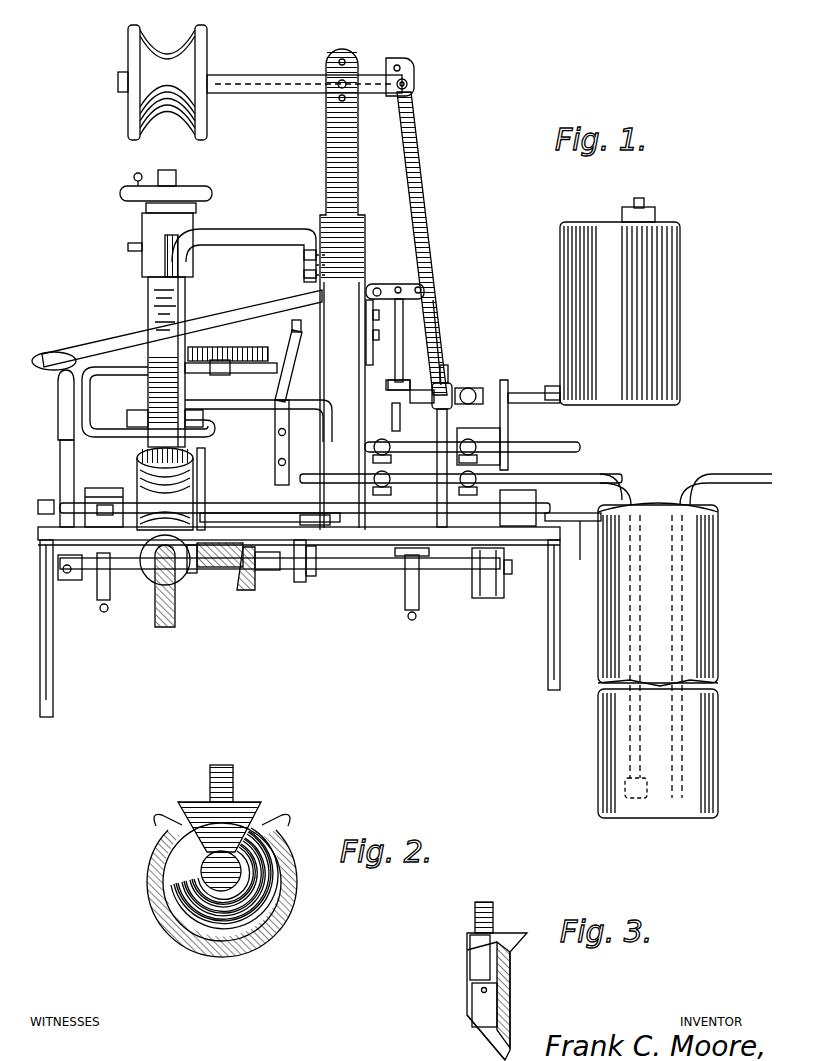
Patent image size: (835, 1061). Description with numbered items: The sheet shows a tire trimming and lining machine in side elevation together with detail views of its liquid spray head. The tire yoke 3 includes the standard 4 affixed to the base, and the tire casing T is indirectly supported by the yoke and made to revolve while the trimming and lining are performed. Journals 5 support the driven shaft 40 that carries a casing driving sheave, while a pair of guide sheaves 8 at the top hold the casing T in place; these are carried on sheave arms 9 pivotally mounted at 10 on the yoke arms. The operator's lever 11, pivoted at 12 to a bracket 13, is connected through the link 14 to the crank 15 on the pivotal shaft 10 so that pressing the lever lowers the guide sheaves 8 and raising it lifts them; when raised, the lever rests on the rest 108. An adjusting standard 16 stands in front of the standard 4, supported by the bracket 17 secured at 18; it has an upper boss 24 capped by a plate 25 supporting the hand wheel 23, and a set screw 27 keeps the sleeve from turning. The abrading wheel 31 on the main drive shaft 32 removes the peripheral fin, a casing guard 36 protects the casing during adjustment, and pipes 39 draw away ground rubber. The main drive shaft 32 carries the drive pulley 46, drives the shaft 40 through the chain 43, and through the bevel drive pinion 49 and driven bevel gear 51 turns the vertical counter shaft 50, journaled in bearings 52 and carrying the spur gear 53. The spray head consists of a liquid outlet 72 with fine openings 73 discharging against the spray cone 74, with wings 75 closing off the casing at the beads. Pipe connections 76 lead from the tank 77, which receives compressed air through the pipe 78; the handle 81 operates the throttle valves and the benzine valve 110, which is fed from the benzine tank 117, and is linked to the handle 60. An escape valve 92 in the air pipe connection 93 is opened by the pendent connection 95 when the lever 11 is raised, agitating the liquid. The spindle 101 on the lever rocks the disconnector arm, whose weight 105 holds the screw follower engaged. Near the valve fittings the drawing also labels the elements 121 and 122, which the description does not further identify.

In FIG. 1, the tire yoke 3 is at (359, 166).
In FIG. 1, the standard 4 is at (330, 366).
In FIG. 1, the journals 5 is at (96, 490).
In FIG. 1, the guide sheaves 8 is at (162, 62).
In FIG. 1, the sheave arms 9 is at (240, 80).
In FIG. 1, the pivotal shaft 10 is at (360, 75).
In FIG. 1, the operator's lever 11 is at (102, 350).
In FIG. 1, the pivot 12 is at (380, 288).
In FIG. 1, the bracket 13 is at (370, 342).
In FIG. 1, the link 14 is at (428, 180).
In FIG. 1, the crank 15 is at (408, 82).
In FIG. 1, the adjusting standard 16 is at (150, 322).
In FIG. 1, the bracket 17 is at (240, 230).
In FIG. 1, the securing point 18 is at (312, 232).
In FIG. 1, the hand wheel 23 is at (122, 196).
In FIG. 1, the upper boss 24 is at (142, 236).
In FIG. 1, the plate 25 is at (148, 210).
In FIG. 1, the set screw 27 is at (130, 248).
In FIG. 1, the abrading wheel 31 is at (164, 622).
In FIG. 1, the main drive shaft 32 is at (408, 574).
In FIG. 1, the casing guard 36 is at (170, 476).
In FIG. 1, the pipes 39 is at (92, 424).
In FIG. 1, the driven shaft 40 is at (406, 516).
In FIG. 1, the chain 43 is at (318, 552).
In FIG. 1, the drive pulley 46 is at (490, 580).
In FIG. 1, the bevel drive pinion 49 is at (248, 578).
In FIG. 1, the vertical counter shaft 50 is at (238, 458).
In FIG. 1, the driven bevel gear 51 is at (228, 566).
In FIG. 1, the bearings 52 is at (245, 516).
In FIG. 1, the spur gear 53 is at (258, 346).
In FIG. 1, the handle 60 is at (58, 482).
In FIG. 2, the liquid outlet 72 is at (236, 871).
In FIG. 3, the liquid outlet 72 is at (472, 1003).
In FIG. 3, the fine openings 73 is at (470, 1022).
In FIG. 2, the spray cone 74 is at (170, 888).
In FIG. 3, the spray cone 74 is at (510, 1016).
In FIG. 2, the wings 75 is at (190, 802).
In FIG. 3, the wings 75 is at (516, 934).
In FIG. 1, the pipe connections 76 is at (622, 482).
In FIG. 1, the tank 77 is at (718, 634).
In FIG. 1, the pipe 78 is at (724, 484).
In FIG. 1, the handle 81 is at (506, 388).
In FIG. 1, the escape valve 92 is at (450, 385).
In FIG. 1, the air pipe connection 93 is at (580, 560).
In FIG. 1, the pendent connection 95 is at (403, 335).
In FIG. 1, the spindle 101 is at (440, 340).
In FIG. 1, the weight 105 is at (470, 488).
In FIG. 1, the rest 108 is at (310, 262).
In FIG. 1, the benzine valve 110 is at (475, 392).
In FIG. 1, the tank 117 is at (680, 330).
In FIG. 1, the valve 121 is at (382, 404).
In FIG. 1, the valve stem 122 is at (412, 410).
In FIG. 2, the tire casing T is at (250, 950).